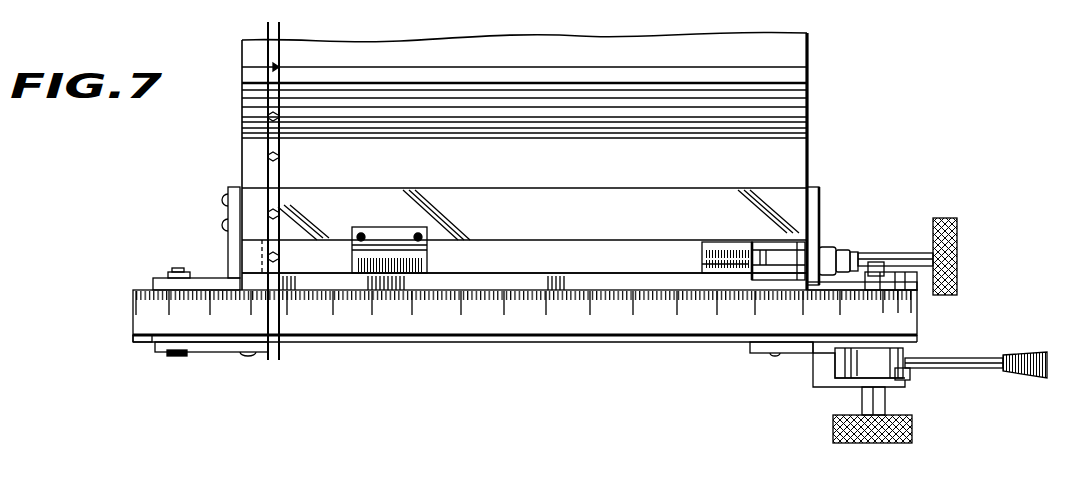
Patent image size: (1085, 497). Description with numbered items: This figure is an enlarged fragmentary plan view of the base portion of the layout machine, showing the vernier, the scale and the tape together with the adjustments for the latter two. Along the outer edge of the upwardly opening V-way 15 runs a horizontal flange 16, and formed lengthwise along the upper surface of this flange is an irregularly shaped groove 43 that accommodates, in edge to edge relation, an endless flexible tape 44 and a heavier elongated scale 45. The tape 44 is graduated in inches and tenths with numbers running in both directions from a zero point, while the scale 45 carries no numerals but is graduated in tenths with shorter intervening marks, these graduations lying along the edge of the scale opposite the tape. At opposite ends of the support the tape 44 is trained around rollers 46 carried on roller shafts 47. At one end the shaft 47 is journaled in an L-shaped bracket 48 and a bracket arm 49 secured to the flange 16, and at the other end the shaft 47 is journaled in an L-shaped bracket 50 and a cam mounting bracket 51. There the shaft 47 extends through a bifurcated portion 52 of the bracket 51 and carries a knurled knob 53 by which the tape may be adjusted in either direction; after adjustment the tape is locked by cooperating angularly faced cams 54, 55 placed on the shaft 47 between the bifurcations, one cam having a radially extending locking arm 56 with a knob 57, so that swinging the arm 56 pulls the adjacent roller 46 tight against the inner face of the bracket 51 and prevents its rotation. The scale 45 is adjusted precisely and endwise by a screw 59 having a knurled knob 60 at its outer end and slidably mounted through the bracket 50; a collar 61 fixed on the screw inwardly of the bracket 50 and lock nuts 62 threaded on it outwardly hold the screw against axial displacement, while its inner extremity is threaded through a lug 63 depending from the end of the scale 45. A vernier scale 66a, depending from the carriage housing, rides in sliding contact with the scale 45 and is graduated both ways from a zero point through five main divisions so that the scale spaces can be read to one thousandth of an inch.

The V-way 15 is at (808, 99).
The flange 16 is at (786, 192).
The groove 43 is at (470, 345).
The endless flexible tape 44 is at (563, 338).
The scale 45 is at (575, 250).
The roller 46 is at (137, 342).
The roller shaft 47 is at (176, 357).
The L-shaped bracket 48 is at (228, 249).
The bracket arm 49 is at (218, 352).
The L-shaped bracket 50 is at (815, 186).
The cam mounting bracket 51 is at (782, 355).
The bifurcated portion 52 is at (830, 356).
The knurled knob 53 is at (915, 428).
The cam 54 is at (850, 366).
The cam 55 is at (910, 376).
The locking arm 56 is at (982, 358).
The knob 57 is at (1038, 353).
The screw 59 is at (895, 252).
The knurled knob 60 is at (957, 237).
The collar 61 is at (800, 276).
The lock nuts 62 is at (830, 247).
The lug 63 is at (722, 242).
The vernier scale 66a is at (428, 258).